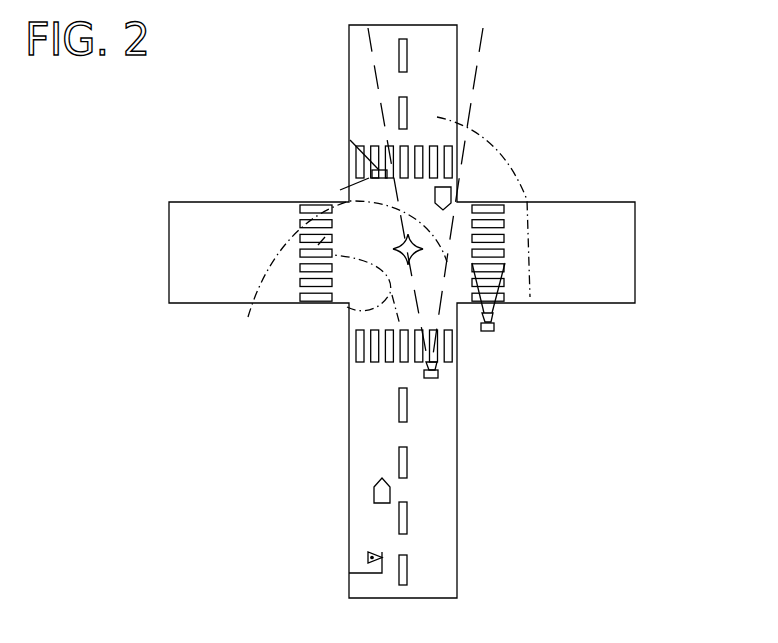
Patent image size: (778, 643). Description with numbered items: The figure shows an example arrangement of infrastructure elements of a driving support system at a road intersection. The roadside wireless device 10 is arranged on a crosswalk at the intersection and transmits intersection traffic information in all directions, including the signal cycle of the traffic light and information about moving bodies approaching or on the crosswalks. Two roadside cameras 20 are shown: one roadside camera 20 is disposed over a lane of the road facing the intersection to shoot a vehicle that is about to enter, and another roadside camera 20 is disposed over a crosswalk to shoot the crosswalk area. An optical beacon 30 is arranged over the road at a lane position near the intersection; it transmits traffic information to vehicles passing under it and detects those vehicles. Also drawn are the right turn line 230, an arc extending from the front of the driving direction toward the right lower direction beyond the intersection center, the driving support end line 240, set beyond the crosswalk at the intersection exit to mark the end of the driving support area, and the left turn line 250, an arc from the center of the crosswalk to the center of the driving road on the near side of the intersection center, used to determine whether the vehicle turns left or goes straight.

The roadside wireless device 10 is at (350, 140).
The roadside camera 20 is at (438, 375).
The optical beacon 30 is at (372, 555).
The right turn line 230 is at (340, 274).
The driving support end line 240 is at (527, 192).
The left turn line 250 is at (347, 307).